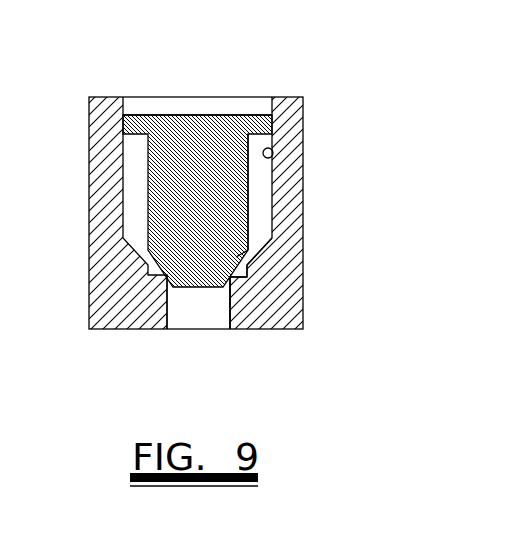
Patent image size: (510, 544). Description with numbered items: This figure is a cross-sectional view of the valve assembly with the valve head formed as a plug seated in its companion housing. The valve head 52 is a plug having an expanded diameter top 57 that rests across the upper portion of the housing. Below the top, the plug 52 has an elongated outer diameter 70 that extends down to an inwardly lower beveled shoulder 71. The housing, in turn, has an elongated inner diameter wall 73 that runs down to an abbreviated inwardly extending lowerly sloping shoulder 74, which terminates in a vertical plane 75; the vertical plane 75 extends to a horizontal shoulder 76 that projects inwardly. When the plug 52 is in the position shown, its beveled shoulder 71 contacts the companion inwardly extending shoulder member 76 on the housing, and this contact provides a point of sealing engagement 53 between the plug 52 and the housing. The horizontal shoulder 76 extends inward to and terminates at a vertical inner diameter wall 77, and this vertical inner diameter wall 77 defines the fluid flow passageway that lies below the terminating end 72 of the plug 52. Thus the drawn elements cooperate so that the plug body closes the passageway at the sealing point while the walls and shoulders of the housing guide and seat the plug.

The valve head 52 is at (187, 185).
The point of sealing engagement 53 is at (162, 283).
The expanded diameter top 57 is at (209, 110).
The elongated outer diameter 70 is at (249, 190).
The lower beveled shoulder 71 is at (240, 254).
The terminating end 72 is at (195, 288).
The elongated inner diameter wall 73 is at (273, 152).
The lowerly sloping shoulder 74 is at (247, 262).
The vertical plane 75 is at (238, 275).
The horizontal shoulder 76 is at (232, 293).
The vertical inner diameter wall 77 is at (262, 305).